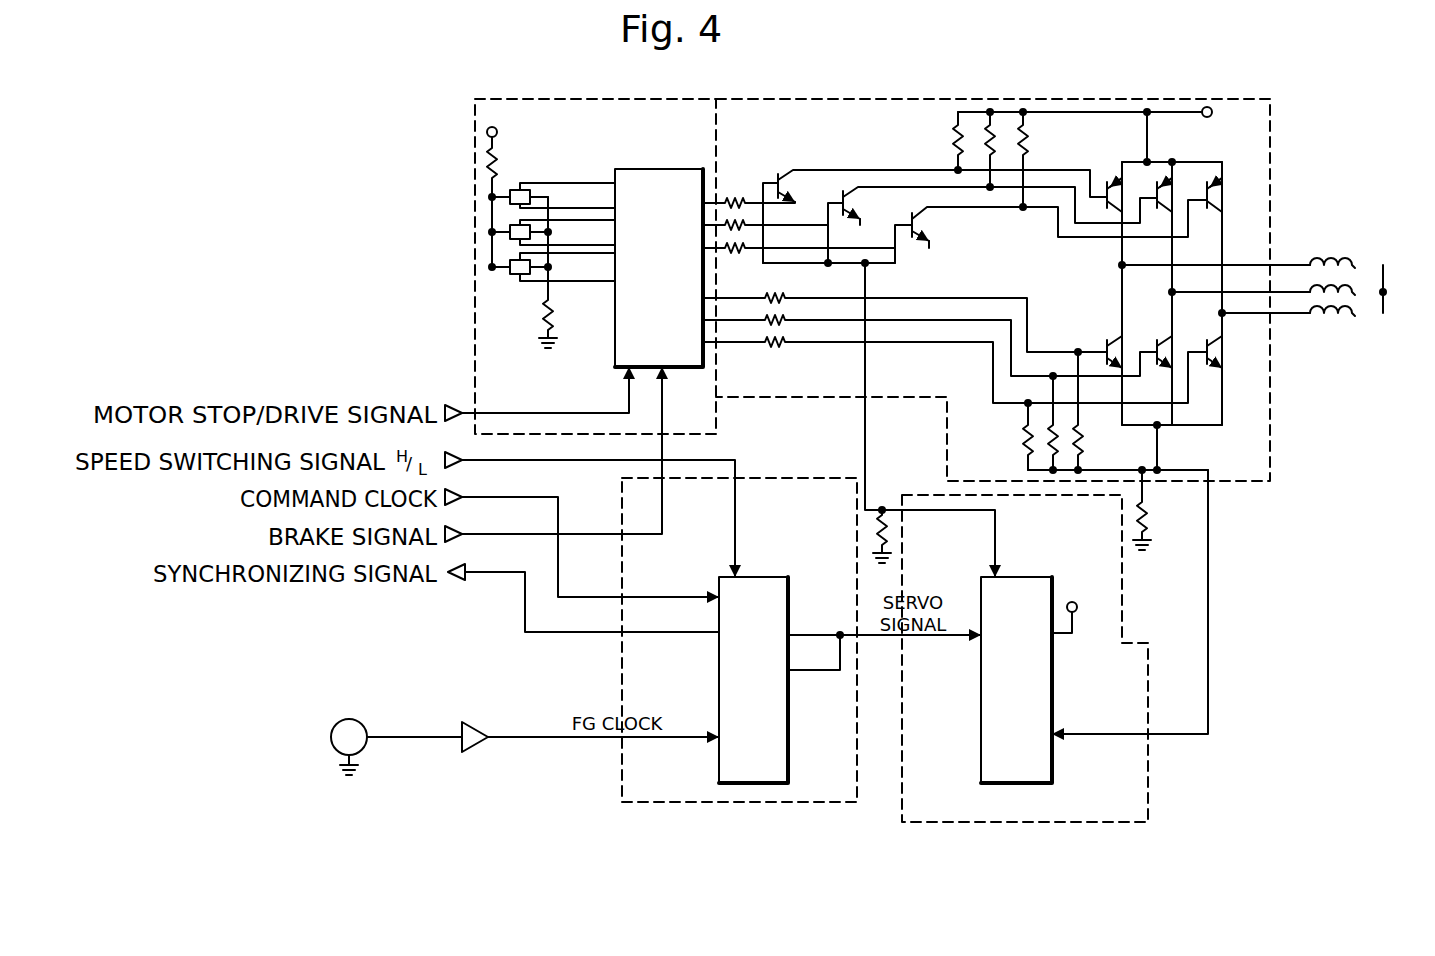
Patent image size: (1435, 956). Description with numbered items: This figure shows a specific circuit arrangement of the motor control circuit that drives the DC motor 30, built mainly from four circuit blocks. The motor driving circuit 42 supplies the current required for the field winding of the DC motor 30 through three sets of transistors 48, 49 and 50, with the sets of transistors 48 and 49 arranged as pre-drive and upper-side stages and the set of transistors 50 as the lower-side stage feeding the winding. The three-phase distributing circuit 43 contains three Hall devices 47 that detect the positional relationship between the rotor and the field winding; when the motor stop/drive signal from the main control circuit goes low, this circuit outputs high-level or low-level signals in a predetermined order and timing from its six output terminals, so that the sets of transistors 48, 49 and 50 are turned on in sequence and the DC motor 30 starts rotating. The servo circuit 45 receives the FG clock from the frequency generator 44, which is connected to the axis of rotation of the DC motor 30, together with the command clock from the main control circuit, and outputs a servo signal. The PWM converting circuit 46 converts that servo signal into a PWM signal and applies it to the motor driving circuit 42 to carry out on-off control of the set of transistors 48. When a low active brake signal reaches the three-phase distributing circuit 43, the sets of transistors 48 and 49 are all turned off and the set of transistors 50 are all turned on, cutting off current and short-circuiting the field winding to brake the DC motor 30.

The DC motor 30 is at (1356, 258).
The motor driving circuit 42 is at (1270, 182).
The three-phase distributing circuit 43 is at (472, 210).
The frequency generator 44 is at (331, 728).
The servo circuit 45 is at (655, 805).
The PWM converting circuit 46 is at (1148, 782).
The Hall devices 47 is at (515, 285).
The set of transistors 48 is at (924, 256).
The set of transistors 49 is at (1116, 176).
The set of transistors 50 is at (1110, 331).